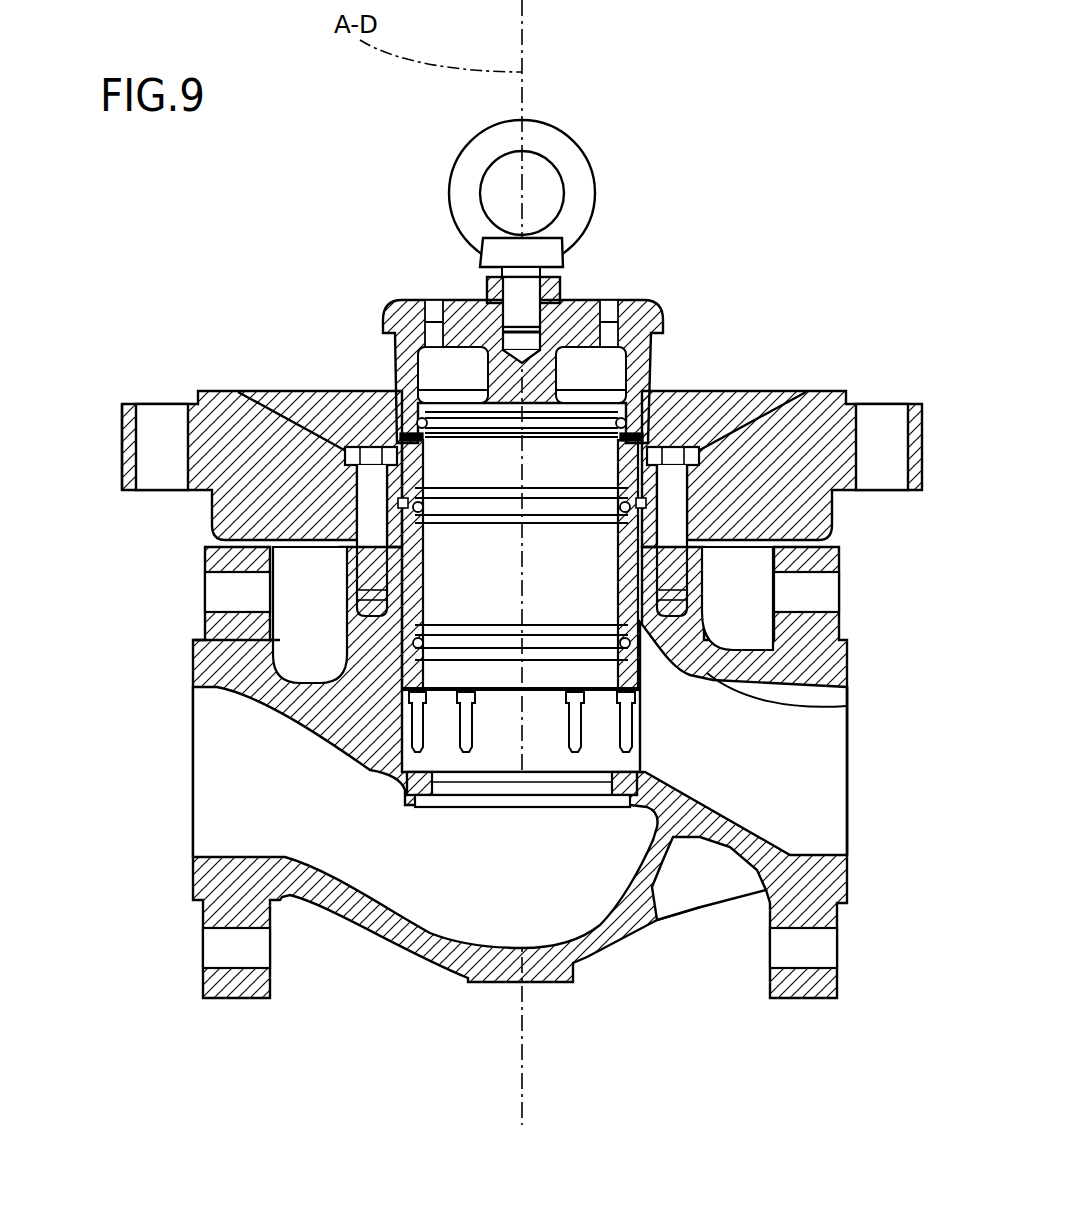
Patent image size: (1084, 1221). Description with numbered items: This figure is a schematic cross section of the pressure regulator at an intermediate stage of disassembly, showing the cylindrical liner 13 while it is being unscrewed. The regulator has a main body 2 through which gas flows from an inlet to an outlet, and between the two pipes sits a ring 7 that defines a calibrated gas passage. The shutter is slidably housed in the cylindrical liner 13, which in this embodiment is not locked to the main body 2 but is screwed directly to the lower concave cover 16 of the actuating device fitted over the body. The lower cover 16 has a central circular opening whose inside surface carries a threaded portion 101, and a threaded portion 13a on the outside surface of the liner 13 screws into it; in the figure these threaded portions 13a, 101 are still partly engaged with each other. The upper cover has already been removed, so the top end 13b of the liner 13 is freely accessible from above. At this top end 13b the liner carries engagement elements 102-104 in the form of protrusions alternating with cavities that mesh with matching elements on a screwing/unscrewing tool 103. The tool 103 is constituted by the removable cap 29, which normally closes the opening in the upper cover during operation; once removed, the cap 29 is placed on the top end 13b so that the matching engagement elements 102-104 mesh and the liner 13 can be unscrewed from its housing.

The main body 2 is at (238, 672).
The ring 7 is at (430, 796).
The cylindrical liner 13 is at (848, 703).
The threaded portion of the liner 13a is at (405, 504).
The top end of the liner 13b is at (385, 433).
The lower concave cover 16 is at (215, 440).
The removable cap 29 is at (400, 298).
The threaded portion of the cover 101 is at (417, 543).
The engagement elements 102-104 is at (648, 432).
The screwing/unscrewing tool 103 is at (580, 292).